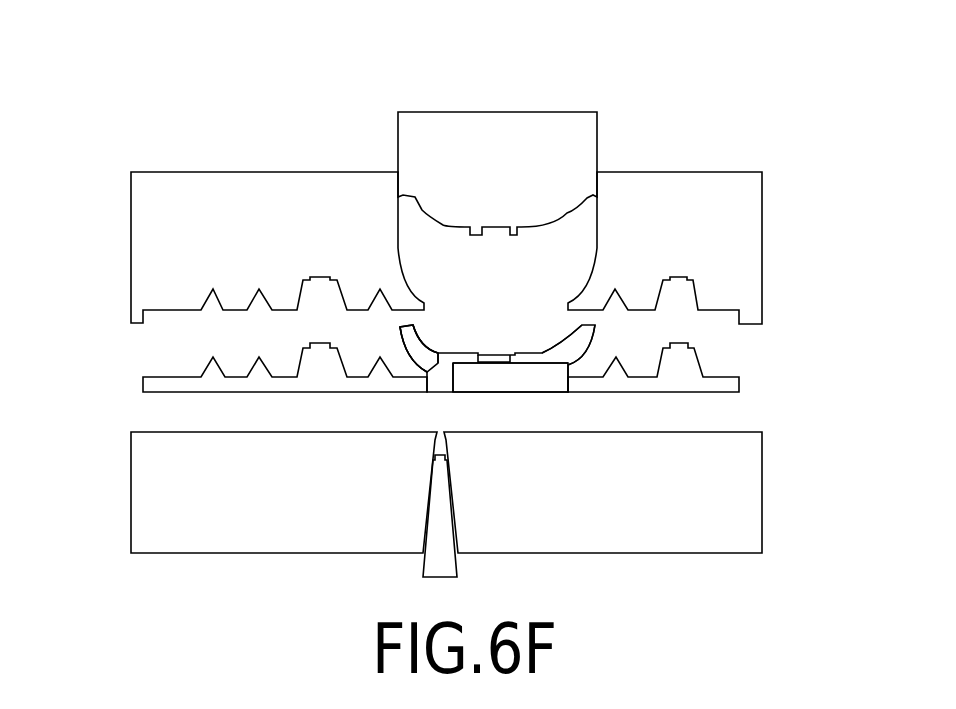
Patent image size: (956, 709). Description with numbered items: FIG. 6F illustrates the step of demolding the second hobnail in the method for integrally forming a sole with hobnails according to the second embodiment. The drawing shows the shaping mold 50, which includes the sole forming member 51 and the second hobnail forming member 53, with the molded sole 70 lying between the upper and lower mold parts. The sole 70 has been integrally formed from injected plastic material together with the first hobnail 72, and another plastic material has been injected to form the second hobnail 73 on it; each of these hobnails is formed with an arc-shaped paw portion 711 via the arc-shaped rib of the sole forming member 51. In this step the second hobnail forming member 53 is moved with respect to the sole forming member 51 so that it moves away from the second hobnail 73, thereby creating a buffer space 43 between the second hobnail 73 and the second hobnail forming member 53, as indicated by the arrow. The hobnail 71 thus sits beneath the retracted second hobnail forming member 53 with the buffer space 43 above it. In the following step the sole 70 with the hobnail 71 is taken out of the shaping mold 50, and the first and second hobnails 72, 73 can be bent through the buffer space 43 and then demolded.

The buffer space 43 is at (433, 260).
The shaping mold 50 is at (688, 68).
The sole forming member 51 is at (662, 190).
The second hobnail forming member 53 is at (573, 142).
The sole 70 is at (695, 383).
The hobnail 71 is at (527, 291).
The first hobnail 72 is at (525, 378).
The second hobnail 73 is at (442, 353).
The arc-shaped paw portion 711 is at (405, 335).